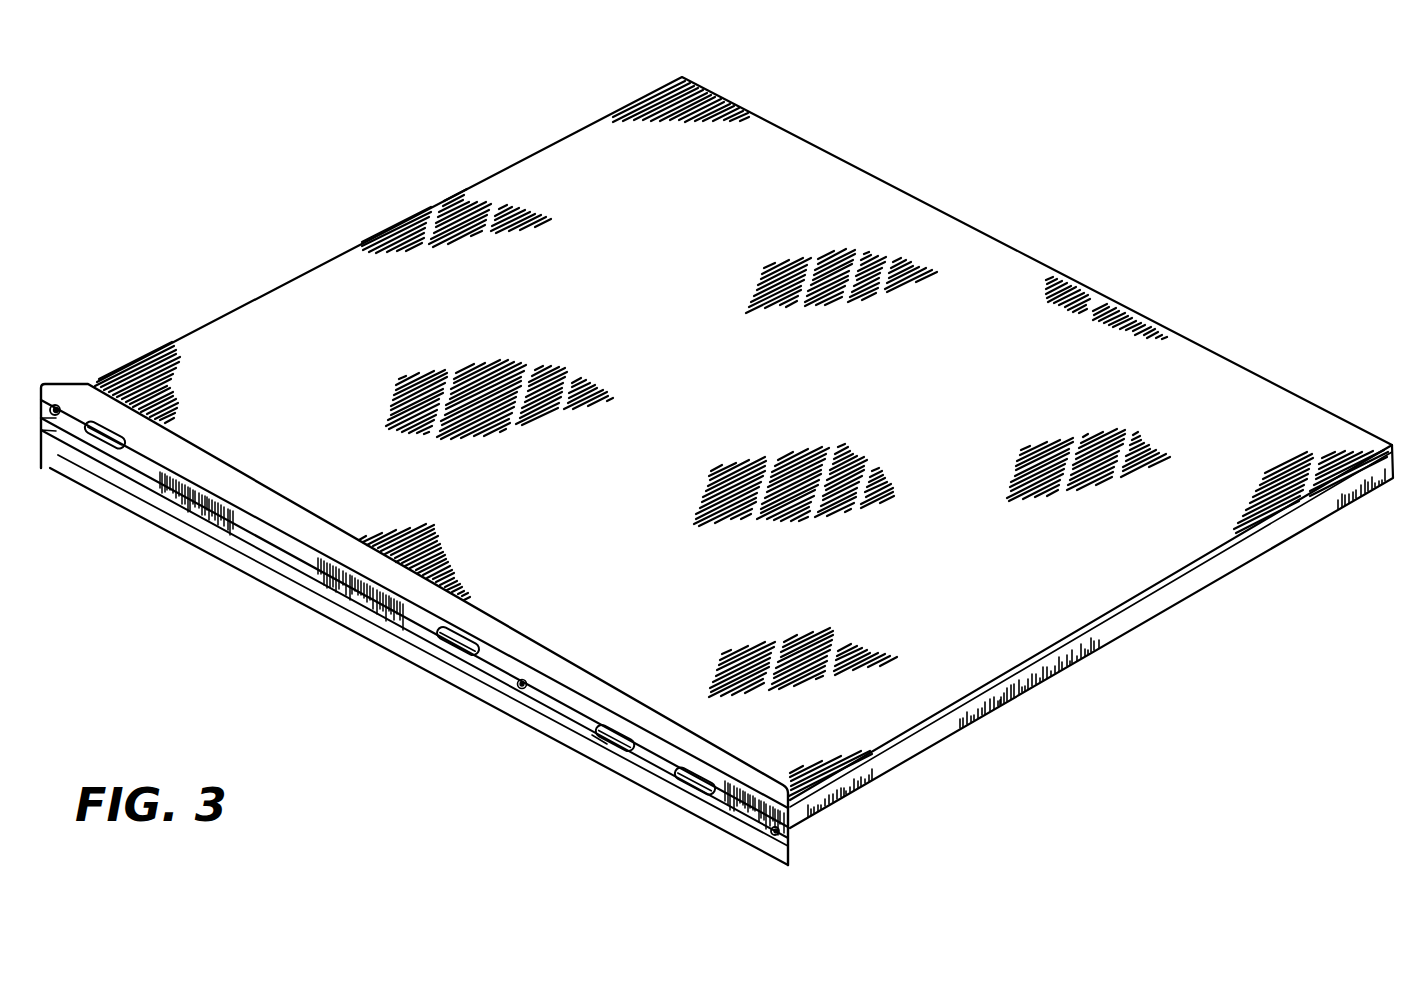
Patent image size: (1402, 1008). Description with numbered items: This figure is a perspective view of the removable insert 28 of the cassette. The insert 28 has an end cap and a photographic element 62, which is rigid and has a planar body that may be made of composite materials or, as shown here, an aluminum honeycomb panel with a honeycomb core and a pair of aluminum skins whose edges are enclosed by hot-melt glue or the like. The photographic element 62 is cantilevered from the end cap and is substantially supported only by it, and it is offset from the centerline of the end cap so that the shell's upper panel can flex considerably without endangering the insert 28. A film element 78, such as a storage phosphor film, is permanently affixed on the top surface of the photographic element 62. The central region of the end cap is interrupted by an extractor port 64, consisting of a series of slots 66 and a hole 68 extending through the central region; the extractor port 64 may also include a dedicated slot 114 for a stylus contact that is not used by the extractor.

The insert 28 is at (1000, 200).
The film element 78 is at (757, 390).
The photographic element 62 is at (1165, 596).
The extractor port 64 is at (93, 444).
The slots 66 is at (400, 609).
The hole 68 is at (526, 680).
The dedicated slot 114 is at (599, 741).